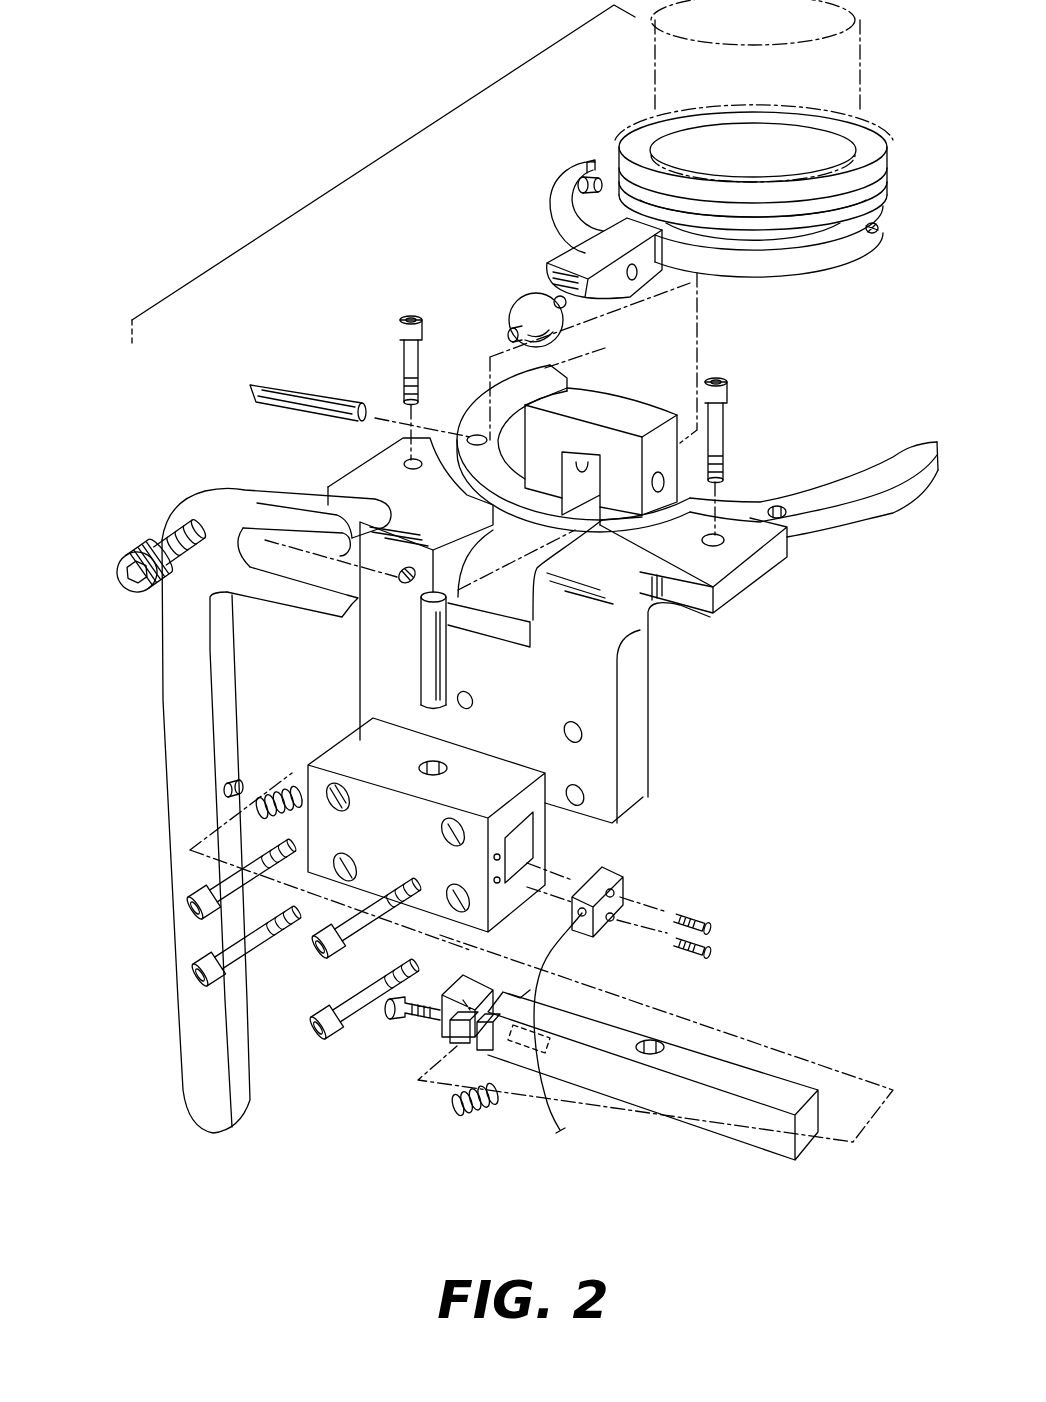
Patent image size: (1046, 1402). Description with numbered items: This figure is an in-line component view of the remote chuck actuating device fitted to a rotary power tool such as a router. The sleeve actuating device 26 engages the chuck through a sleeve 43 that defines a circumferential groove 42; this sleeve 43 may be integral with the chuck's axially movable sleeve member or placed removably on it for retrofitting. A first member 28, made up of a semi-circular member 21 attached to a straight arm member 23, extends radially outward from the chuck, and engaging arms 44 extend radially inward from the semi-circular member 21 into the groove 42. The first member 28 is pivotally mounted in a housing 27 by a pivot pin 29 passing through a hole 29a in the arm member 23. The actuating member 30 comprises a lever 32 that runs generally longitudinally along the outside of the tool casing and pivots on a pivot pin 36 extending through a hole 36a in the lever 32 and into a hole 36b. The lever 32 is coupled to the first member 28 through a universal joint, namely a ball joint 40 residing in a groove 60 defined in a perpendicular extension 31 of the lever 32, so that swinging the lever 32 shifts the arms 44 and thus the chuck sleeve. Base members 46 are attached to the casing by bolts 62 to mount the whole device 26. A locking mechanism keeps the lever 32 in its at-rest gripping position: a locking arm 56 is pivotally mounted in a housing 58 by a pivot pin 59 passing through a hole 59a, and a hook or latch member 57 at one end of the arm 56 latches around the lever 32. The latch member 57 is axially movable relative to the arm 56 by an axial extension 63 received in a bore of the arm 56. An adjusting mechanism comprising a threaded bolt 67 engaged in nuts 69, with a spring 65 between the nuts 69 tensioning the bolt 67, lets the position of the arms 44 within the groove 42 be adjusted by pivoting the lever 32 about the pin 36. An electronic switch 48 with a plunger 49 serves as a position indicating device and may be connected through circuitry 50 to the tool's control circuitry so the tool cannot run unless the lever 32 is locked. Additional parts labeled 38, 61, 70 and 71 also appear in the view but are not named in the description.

The semi-circular member 21 is at (790, 262).
The straight arm member 23 is at (613, 293).
The sleeve actuating device 26 is at (218, 192).
The housing 27 is at (607, 418).
The first member 28 is at (527, 238).
The pivot pin 29 is at (318, 385).
The hole 29a is at (640, 272).
The actuating member 30 is at (145, 684).
The perpendicular extension 31 is at (263, 592).
The lever arm 32 is at (170, 758).
The pivot pin 36 is at (142, 560).
The hole 36a is at (183, 523).
The hole 36b is at (403, 585).
The ball joint 38 is at (503, 306).
The ball joint 40 is at (509, 320).
The circumferential groove 42 is at (888, 190).
The sleeve 43 is at (885, 152).
The engaging arms 44 is at (587, 176).
The base members 46 is at (843, 508).
The electronic switch 48 is at (603, 867).
The plunger 49 is at (622, 878).
The circuitry 50 is at (553, 1093).
The locking arm 56 is at (667, 1098).
The latch member 57 is at (482, 975).
The housing 58 is at (348, 757).
The pivot pin 59 is at (455, 660).
The hole 59a is at (653, 1047).
The groove 60 is at (262, 542).
The sensor assembly 61 is at (420, 1045).
The bolts 62 is at (410, 320).
The axial extension 63 is at (508, 1038).
The spring 65 is at (462, 1112).
The threaded bolt 67 is at (408, 1005).
The nuts 69 is at (458, 1047).
The spring 70 is at (280, 790).
The pin 71 is at (238, 785).